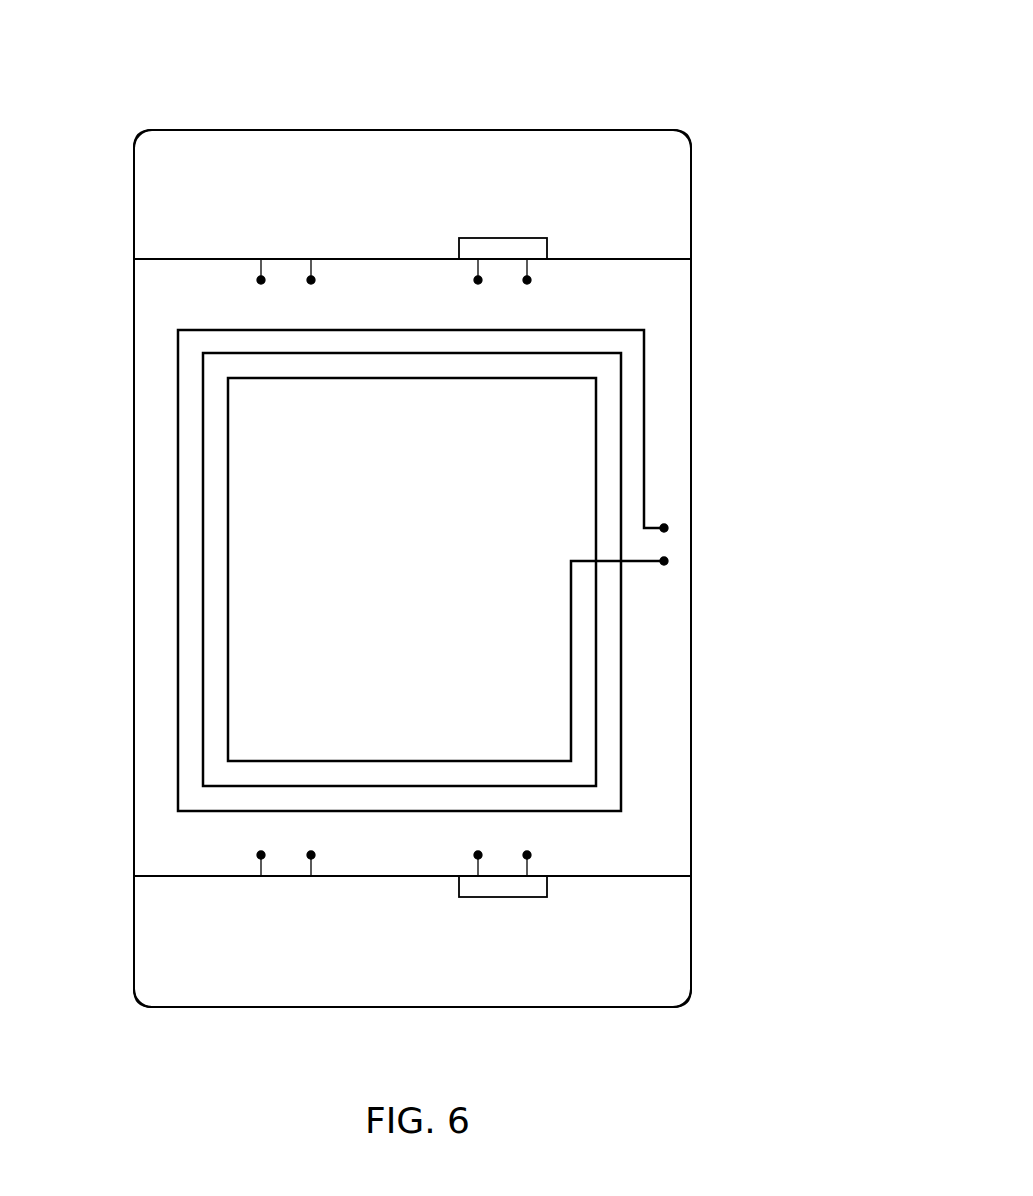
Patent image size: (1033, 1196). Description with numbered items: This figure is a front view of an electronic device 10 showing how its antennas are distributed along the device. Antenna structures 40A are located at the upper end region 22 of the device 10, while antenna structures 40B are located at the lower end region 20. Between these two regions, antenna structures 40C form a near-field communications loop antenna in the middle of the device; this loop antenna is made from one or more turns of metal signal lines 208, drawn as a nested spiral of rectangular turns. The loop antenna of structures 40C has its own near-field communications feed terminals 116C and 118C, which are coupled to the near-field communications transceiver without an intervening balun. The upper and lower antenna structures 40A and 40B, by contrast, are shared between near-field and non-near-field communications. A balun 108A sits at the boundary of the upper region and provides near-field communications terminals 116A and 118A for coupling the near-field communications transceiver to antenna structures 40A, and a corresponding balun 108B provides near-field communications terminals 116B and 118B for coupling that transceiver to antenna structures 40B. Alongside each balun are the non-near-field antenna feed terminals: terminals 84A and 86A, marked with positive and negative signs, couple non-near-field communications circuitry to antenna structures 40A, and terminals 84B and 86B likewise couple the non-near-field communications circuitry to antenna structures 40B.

The electronic device 10 is at (636, 56).
The lower end region 20 is at (717, 874).
The upper end region 22 is at (717, 127).
The antenna structures 40A is at (146, 193).
The antenna structures 40B is at (145, 937).
The antenna structures 40C is at (350, 570).
The metal signal lines 208 is at (178, 495).
The non-near-field antenna terminal 84A is at (261, 284).
The non-near-field antenna terminal 86A is at (311, 284).
The non-near-field antenna terminal 84B is at (258, 855).
The non-near-field antenna terminal 86B is at (311, 851).
The balun 108A is at (547, 247).
The balun 108B is at (547, 888).
The near-field communications terminal 116A is at (478, 284).
The near-field communications terminal 118A is at (531, 281).
The near-field communications terminal 116B is at (478, 851).
The near-field communications terminal 118B is at (531, 855).
The near-field communications feed terminal 116C is at (667, 525).
The near-field communications feed terminal 118C is at (667, 564).